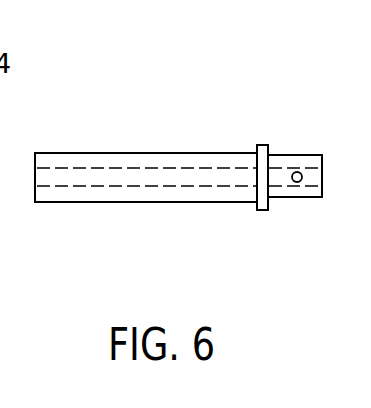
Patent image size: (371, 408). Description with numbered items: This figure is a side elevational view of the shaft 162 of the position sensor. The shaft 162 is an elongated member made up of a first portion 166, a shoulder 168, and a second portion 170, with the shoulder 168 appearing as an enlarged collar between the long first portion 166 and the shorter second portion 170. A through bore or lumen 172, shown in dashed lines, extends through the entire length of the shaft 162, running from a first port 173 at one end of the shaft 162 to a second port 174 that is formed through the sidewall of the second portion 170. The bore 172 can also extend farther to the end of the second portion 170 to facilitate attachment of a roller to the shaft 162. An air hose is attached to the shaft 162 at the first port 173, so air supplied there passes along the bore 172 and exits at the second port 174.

The shaft 162 is at (248, 88).
The first portion 166 is at (125, 203).
The shoulder 168 is at (263, 211).
The second portion 170 is at (295, 198).
The through bore 172 is at (134, 168).
The first port 173 is at (45, 186).
The second port 174 is at (300, 172).